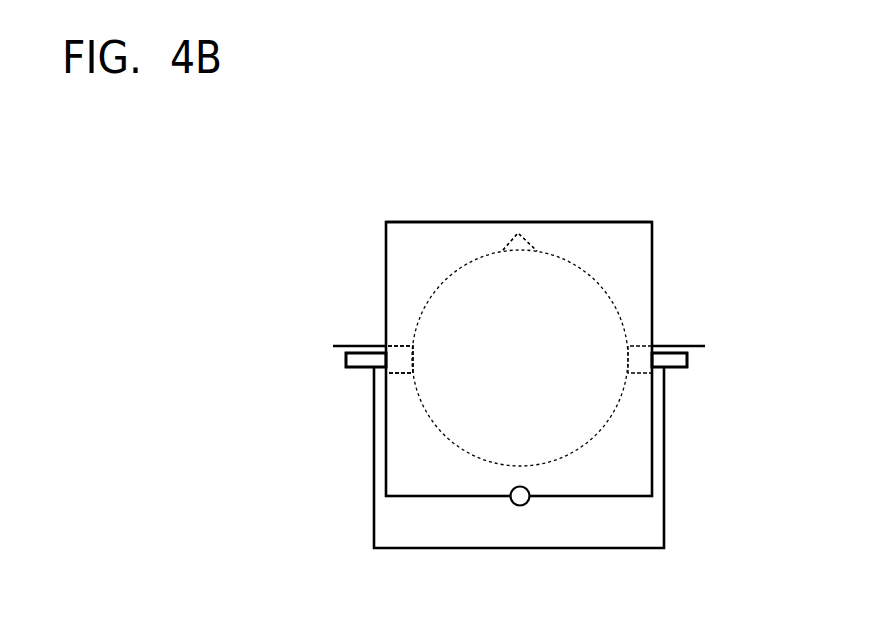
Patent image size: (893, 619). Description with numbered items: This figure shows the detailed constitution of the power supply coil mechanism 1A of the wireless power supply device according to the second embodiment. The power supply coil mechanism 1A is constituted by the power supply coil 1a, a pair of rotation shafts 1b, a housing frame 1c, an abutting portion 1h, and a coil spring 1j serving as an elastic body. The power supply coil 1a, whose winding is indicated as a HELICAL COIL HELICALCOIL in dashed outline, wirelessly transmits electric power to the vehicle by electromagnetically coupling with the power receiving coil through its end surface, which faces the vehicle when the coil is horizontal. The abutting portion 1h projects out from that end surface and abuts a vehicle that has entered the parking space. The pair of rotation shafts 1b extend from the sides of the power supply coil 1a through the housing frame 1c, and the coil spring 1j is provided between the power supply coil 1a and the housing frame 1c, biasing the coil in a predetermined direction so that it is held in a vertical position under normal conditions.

The power supply coil mechanism 1A is at (676, 200).
The power supply coil 1a is at (403, 345).
The rotation shafts 1b is at (378, 346).
The housing frame 1c is at (374, 445).
The abutting portion 1h is at (518, 233).
The coil spring 1j is at (519, 506).
The helical coil HELICALCOIL is at (570, 262).